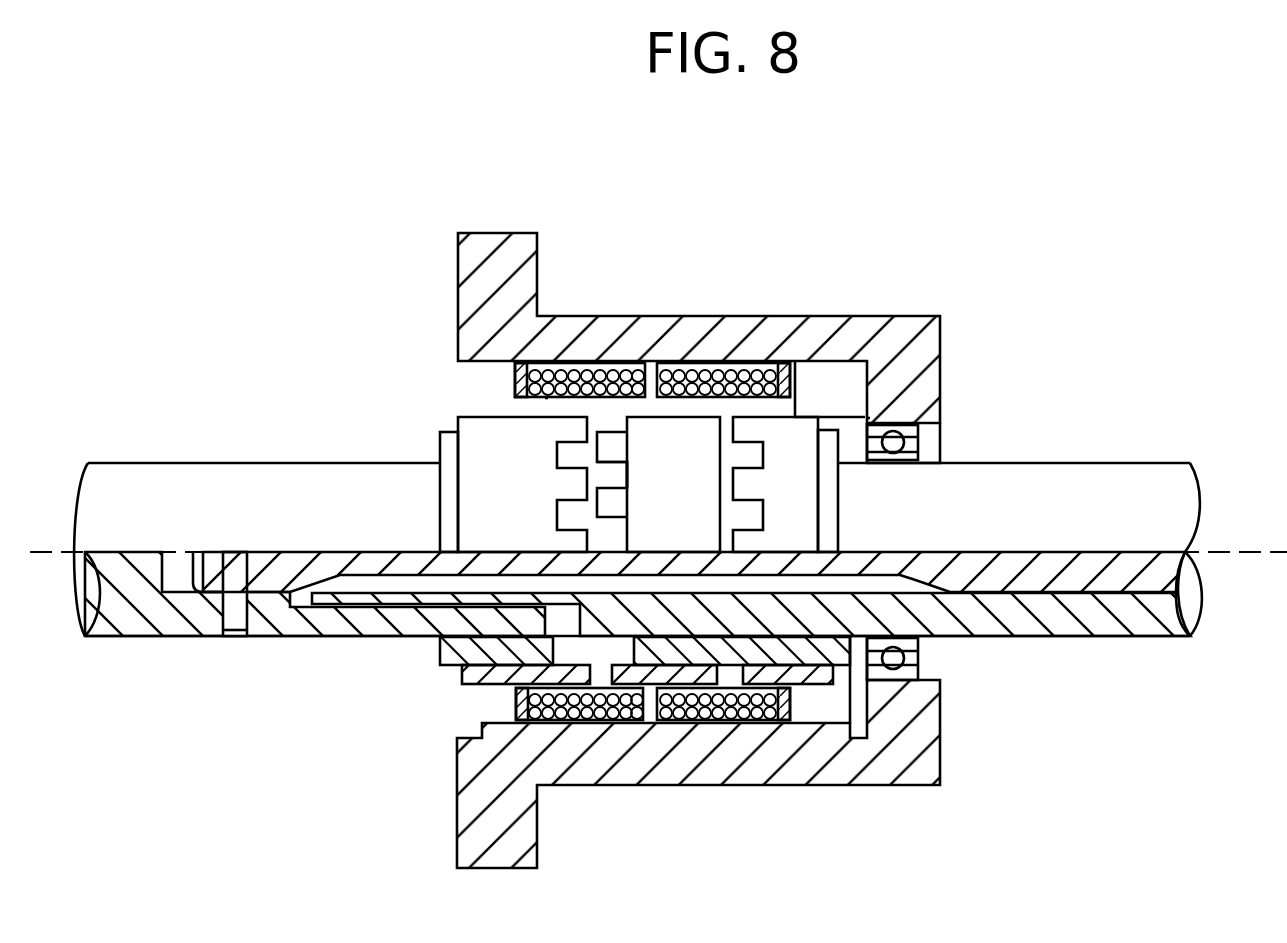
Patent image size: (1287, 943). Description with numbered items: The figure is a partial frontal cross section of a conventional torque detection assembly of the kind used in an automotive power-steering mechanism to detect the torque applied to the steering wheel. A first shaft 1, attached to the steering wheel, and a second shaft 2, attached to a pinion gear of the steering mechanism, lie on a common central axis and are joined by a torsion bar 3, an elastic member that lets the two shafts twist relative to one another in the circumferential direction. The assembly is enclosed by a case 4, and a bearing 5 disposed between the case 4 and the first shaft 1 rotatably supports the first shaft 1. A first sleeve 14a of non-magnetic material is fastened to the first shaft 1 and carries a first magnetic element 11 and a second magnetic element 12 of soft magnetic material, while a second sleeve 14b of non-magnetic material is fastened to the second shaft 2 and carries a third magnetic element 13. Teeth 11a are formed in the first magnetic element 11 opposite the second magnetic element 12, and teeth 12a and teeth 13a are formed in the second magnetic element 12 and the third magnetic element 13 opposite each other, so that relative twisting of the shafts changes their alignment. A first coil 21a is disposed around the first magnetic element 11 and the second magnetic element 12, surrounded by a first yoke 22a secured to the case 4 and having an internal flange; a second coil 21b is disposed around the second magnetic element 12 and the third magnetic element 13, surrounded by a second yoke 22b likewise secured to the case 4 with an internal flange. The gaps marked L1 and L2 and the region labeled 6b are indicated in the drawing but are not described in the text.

The first shaft 1 is at (1128, 463).
The second shaft 2 is at (130, 470).
The torsion bar 3 is at (902, 573).
The case 4 is at (462, 258).
The bearing 5 is at (905, 455).
The engaging tooth 6b is at (607, 478).
The first magnetic element 11 is at (803, 437).
The teeth 11a is at (755, 538).
The second magnetic element 12 is at (700, 437).
The teeth 12a is at (628, 497).
The third magnetic element 13 is at (570, 443).
The teeth 13a is at (568, 483).
The first sleeve 14a is at (820, 662).
The second sleeve 14b is at (465, 668).
The first coil 21a is at (765, 388).
The second coil 21b is at (530, 366).
The first yoke 22a is at (730, 393).
The second yoke 22b is at (560, 392).
The gap length L1 is at (545, 398).
The gap length L2 is at (870, 418).